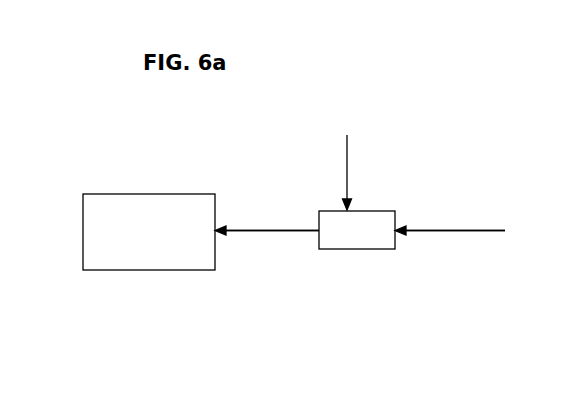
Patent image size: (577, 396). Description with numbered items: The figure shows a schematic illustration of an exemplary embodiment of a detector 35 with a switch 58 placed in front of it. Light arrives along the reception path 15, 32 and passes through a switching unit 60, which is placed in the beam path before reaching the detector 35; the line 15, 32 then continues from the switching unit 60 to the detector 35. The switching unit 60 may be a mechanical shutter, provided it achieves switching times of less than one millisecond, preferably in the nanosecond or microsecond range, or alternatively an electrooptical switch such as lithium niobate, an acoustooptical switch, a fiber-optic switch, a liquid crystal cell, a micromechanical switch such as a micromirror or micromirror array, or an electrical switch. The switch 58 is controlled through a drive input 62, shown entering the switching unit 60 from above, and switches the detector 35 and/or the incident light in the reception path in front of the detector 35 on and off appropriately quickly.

The fluid line / flow path 15 is at (273, 230).
The fluid line / flow path 32 is at (349, 177).
The detector 35 is at (150, 270).
The switch 58 is at (412, 270).
The switching unit 60 is at (350, 250).
The drive input 62 is at (347, 152).